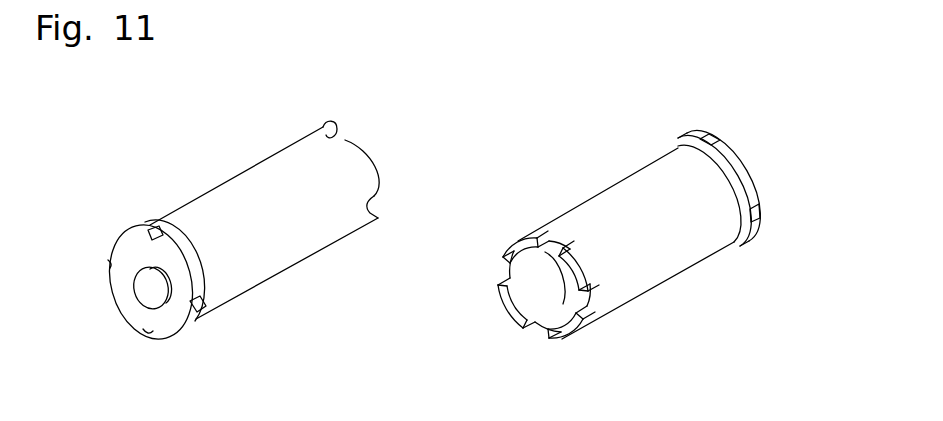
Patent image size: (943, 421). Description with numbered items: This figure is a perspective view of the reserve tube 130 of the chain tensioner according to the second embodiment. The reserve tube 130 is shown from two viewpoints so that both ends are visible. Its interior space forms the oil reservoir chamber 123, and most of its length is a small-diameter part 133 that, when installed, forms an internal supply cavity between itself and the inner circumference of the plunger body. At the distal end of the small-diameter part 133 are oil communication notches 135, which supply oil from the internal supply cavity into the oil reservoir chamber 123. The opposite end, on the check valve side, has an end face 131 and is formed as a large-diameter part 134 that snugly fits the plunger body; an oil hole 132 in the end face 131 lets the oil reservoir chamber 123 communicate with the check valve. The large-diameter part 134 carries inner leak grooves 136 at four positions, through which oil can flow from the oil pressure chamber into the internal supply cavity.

The reserve tube 130 is at (130, 158).
The end face 131 is at (132, 256).
The oil hole 132 is at (154, 283).
The small-diameter part 133 is at (258, 242).
The large-diameter part 134 is at (197, 321).
The oil communication notches 135 is at (374, 202).
The inner leak grooves 136 is at (180, 239).
The oil reservoir chamber 123 is at (540, 288).